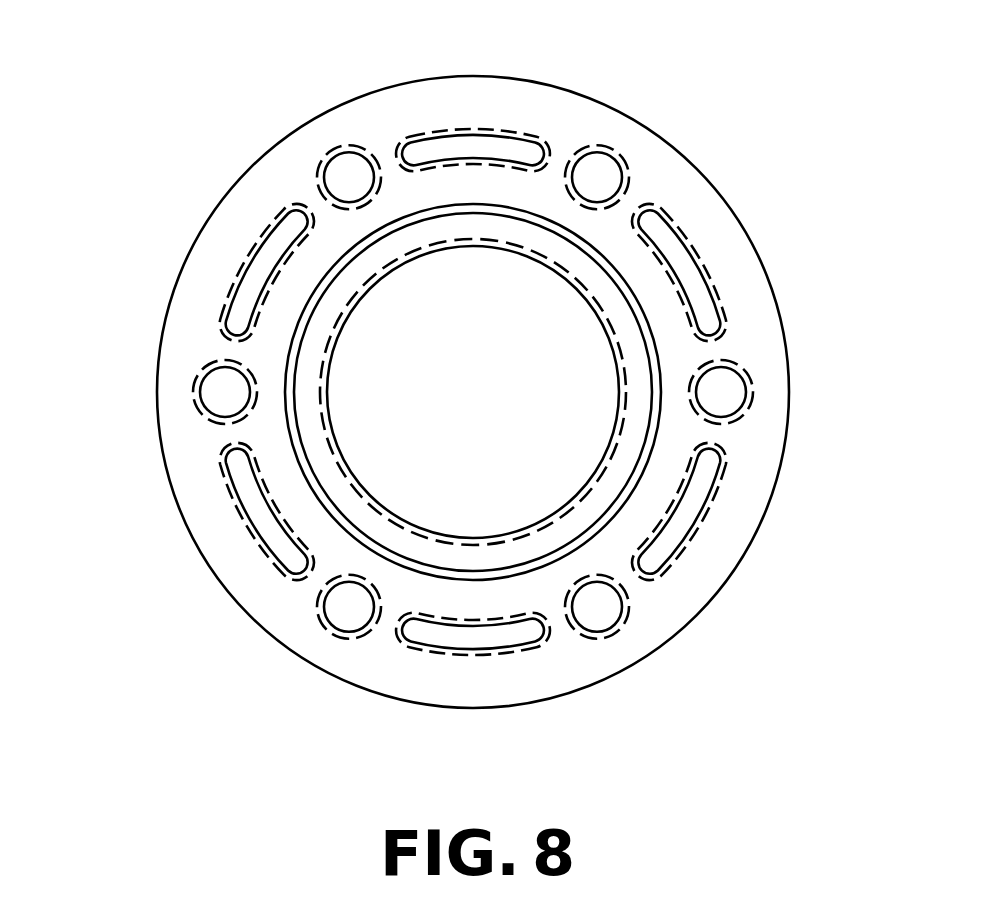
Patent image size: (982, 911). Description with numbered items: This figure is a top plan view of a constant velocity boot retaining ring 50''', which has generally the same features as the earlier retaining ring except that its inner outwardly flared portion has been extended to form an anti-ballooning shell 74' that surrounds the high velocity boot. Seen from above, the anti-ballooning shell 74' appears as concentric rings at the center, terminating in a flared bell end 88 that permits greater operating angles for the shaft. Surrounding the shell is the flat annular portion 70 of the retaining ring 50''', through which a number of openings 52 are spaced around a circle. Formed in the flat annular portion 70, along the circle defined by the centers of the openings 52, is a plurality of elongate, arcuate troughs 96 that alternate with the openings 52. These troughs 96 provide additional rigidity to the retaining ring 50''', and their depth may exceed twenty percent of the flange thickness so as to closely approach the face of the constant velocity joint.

The constant velocity boot retaining ring 50''' is at (470, 398).
The flat annular portion 70 is at (658, 182).
The anti-ballooning shell 74' is at (473, 392).
The flared bell end 88 is at (588, 497).
The openings 52 is at (336, 158).
The elongate arcuate troughs 96 is at (466, 140).